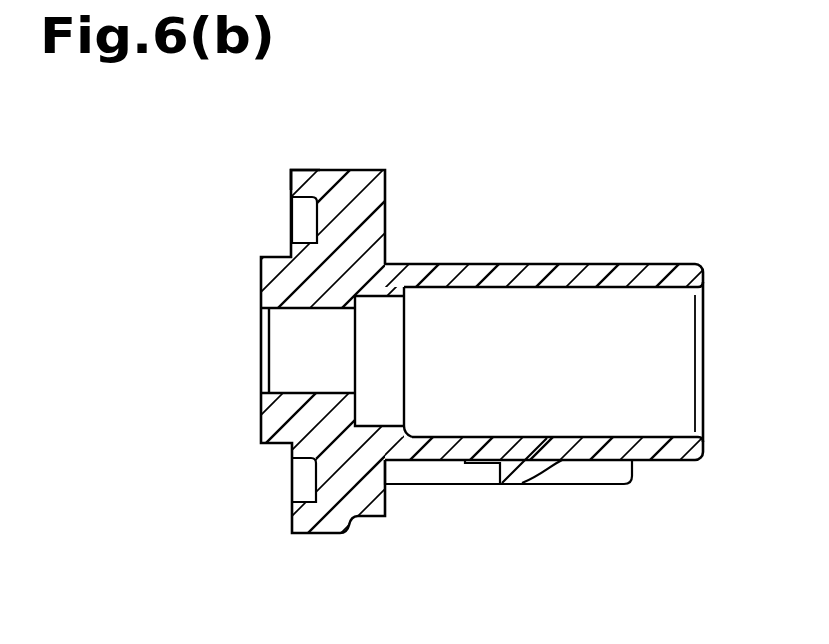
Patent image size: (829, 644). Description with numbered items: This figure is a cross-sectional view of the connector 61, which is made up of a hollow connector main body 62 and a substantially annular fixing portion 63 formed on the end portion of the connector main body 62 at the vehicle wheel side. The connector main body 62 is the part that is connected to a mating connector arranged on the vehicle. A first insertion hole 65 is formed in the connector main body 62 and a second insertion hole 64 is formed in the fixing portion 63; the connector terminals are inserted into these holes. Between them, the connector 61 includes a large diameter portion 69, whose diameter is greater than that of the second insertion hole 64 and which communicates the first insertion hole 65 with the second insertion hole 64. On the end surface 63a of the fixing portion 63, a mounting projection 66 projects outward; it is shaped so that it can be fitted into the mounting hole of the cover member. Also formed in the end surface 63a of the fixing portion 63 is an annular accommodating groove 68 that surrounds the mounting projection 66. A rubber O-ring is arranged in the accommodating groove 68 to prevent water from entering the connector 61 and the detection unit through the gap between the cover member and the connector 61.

The connector 61 is at (660, 567).
The connector main body 62 is at (667, 264).
The fixing portion 63 is at (320, 534).
The end surface 63a is at (292, 181).
The second insertion hole 64 is at (286, 310).
The first insertion hole 65 is at (618, 291).
The mounting projection 66 is at (279, 451).
The accommodating groove 68 is at (300, 241).
The large diameter portion 69 is at (395, 296).